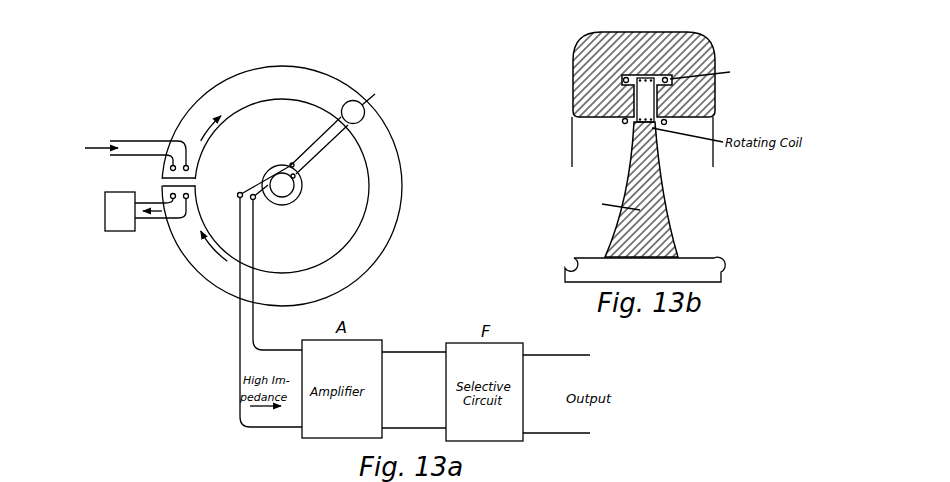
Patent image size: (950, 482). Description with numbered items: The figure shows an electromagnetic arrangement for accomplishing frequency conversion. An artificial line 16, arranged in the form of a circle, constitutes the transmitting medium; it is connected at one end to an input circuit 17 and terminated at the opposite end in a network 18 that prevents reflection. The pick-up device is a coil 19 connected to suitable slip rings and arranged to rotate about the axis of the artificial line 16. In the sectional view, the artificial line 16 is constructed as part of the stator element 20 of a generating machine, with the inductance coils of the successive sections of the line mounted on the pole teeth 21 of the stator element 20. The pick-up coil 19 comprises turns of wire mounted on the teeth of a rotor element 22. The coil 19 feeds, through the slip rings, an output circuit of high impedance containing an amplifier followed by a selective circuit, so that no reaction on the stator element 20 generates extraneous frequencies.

In FIG. 13A, the artificial line 16 is at (328, 86).
In FIG. 13A, the input circuit 17 is at (135, 150).
In FIG. 13A, the network 18 is at (120, 231).
In FIG. 13A, the pick-up coil 19 is at (365, 117).
In FIG. 13B, the stator element 20 is at (692, 46).
In FIG. 13B, the pole teeth 21 is at (621, 114).
In FIG. 13B, the rotor element 22 is at (643, 193).